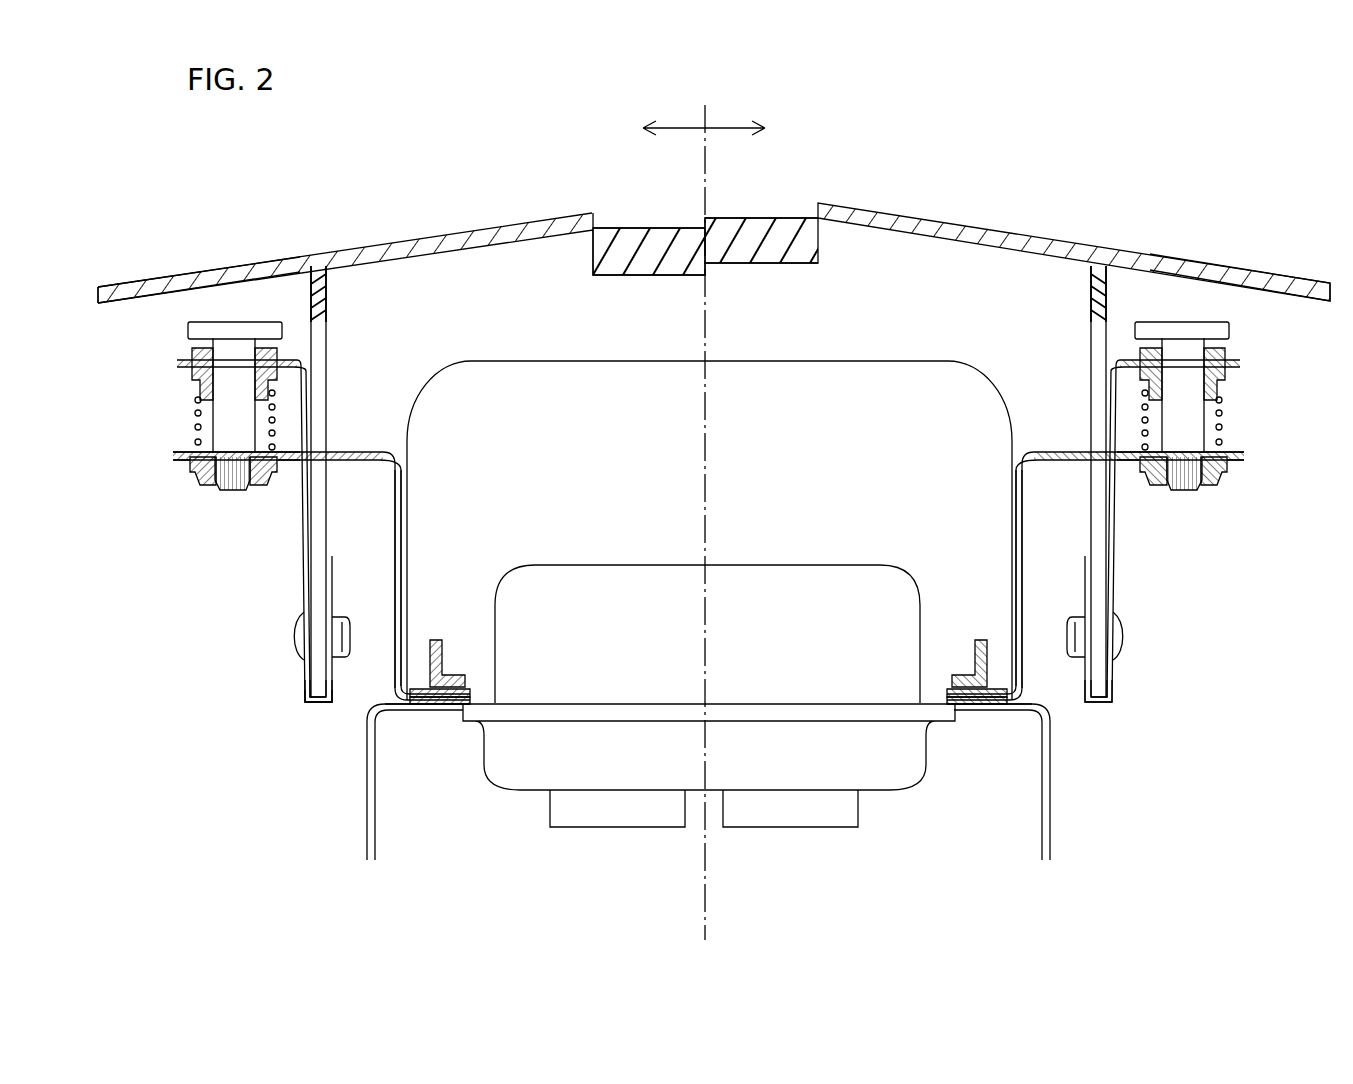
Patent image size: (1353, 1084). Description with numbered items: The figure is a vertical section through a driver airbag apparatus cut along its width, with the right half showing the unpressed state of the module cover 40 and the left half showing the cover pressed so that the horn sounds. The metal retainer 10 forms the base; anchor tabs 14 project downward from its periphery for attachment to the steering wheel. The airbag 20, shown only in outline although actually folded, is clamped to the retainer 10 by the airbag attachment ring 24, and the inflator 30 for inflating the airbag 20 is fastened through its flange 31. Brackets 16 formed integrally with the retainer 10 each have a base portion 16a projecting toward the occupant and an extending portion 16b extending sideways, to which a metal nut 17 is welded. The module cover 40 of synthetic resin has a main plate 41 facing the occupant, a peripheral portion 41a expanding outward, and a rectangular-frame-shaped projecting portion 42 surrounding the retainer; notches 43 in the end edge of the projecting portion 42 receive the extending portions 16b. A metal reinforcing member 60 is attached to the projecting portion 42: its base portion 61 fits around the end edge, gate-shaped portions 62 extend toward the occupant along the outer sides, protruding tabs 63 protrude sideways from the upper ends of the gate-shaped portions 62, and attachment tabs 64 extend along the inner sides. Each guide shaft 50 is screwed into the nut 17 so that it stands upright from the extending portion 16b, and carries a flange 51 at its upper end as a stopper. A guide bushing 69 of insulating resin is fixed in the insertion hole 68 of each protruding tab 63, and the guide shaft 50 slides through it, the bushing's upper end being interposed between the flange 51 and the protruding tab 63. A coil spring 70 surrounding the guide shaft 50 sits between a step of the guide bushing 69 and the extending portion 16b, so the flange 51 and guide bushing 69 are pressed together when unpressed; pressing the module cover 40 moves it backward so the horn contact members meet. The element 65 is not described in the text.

The retainer 10 is at (435, 719).
The anchor tab 14 is at (367, 838).
The bracket 16 is at (371, 448).
The base portion 16a is at (395, 543).
The extending portion 16b is at (196, 466).
The nut 17 is at (210, 490).
The airbag 20 is at (575, 361).
The airbag attachment ring 24 is at (440, 645).
The inflator 30 is at (752, 565).
The flange 31 is at (785, 704).
The module cover 40 is at (1031, 226).
The main plate 41 is at (885, 203).
The peripheral portion 41a is at (150, 283).
The projecting portion 42 is at (330, 310).
The notch 43 is at (328, 360).
The guide shaft 50 is at (238, 494).
The flange 51 is at (190, 330).
The reinforcing member 60 is at (285, 706).
The base portion 61 is at (305, 703).
The gate-shaped portion 62 is at (302, 530).
The protruding tab 63 is at (190, 365).
The attachment tab 64 is at (338, 666).
The protrusion 65 is at (296, 632).
The insertion hole 68 is at (190, 355).
The guide bushing 69 is at (292, 350).
The coil spring 70 is at (198, 405).